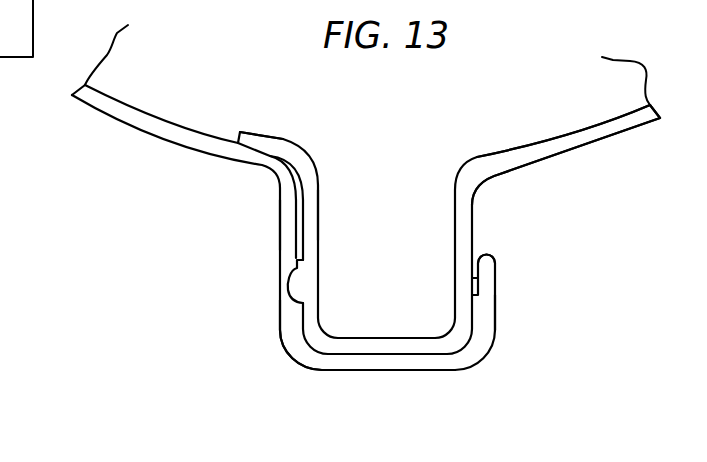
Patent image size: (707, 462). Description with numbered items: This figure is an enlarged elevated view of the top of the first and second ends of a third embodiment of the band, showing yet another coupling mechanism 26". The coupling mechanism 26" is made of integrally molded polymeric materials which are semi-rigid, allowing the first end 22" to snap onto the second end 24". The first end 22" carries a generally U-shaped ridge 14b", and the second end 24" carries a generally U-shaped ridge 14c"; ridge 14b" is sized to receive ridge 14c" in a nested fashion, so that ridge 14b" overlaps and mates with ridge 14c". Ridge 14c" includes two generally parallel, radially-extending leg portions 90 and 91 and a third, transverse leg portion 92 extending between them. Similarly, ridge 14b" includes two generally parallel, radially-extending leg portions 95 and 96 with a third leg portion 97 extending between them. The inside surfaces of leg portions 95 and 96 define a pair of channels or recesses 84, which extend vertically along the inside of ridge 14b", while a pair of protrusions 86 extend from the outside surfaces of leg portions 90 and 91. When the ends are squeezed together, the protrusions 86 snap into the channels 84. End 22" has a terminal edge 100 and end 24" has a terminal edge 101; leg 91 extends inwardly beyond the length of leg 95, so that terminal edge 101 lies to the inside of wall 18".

The ridge 14b is at (368, 368).
The ridge 14c is at (400, 348).
The wall 18 is at (102, 113).
The first end 22 is at (163, 147).
The terminal edge 101 is at (238, 142).
The leg portion 91 is at (320, 213).
The leg portion 95 is at (279, 228).
The protrusions 86 is at (290, 285).
The channels 84 is at (314, 284).
The leg portion 92 is at (383, 337).
The terminal edge 100 is at (484, 256).
The second end 24 is at (491, 218).
The leg portion 96 is at (496, 300).
The coupling mechanism 26 is at (258, 338).
The leg portion 97 is at (379, 376).
The leg portion 90 is at (472, 205).